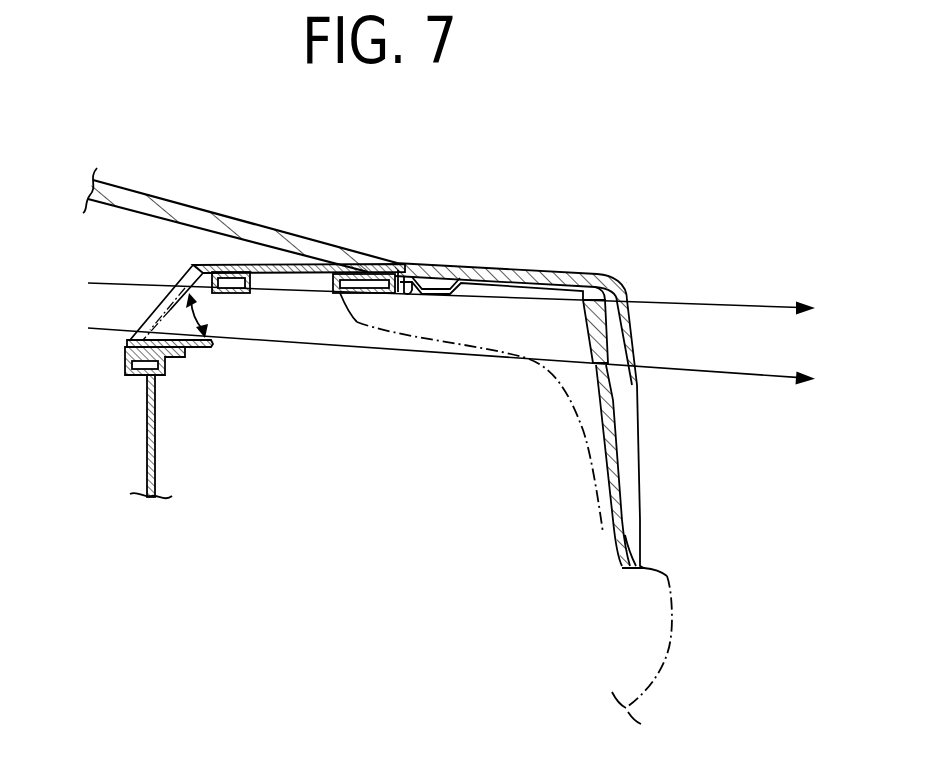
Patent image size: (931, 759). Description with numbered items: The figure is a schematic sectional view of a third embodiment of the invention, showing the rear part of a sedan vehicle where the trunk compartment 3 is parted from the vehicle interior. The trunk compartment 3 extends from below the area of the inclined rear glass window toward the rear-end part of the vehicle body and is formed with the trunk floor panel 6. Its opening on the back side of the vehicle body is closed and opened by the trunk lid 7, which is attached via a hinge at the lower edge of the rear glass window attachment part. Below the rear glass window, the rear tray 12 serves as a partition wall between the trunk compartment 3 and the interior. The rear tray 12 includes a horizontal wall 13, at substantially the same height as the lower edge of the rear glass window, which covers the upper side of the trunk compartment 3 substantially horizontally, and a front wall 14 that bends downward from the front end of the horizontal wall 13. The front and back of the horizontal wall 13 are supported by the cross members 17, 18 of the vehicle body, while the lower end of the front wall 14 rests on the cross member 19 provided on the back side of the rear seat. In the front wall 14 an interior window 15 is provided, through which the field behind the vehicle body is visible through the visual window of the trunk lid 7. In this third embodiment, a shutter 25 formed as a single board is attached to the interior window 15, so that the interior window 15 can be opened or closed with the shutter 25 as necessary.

The trunk compartment 3 is at (503, 500).
The trunk floor panel 6 is at (157, 450).
The trunk lid 7 is at (568, 266).
The rear tray 12 is at (257, 250).
The horizontal wall 13 is at (290, 263).
The front wall 14 is at (190, 266).
The interior window 15 is at (183, 283).
The cross member 17 is at (240, 272).
The cross member 18 is at (396, 294).
The cross member 19 is at (134, 377).
The shutter 25 is at (203, 352).